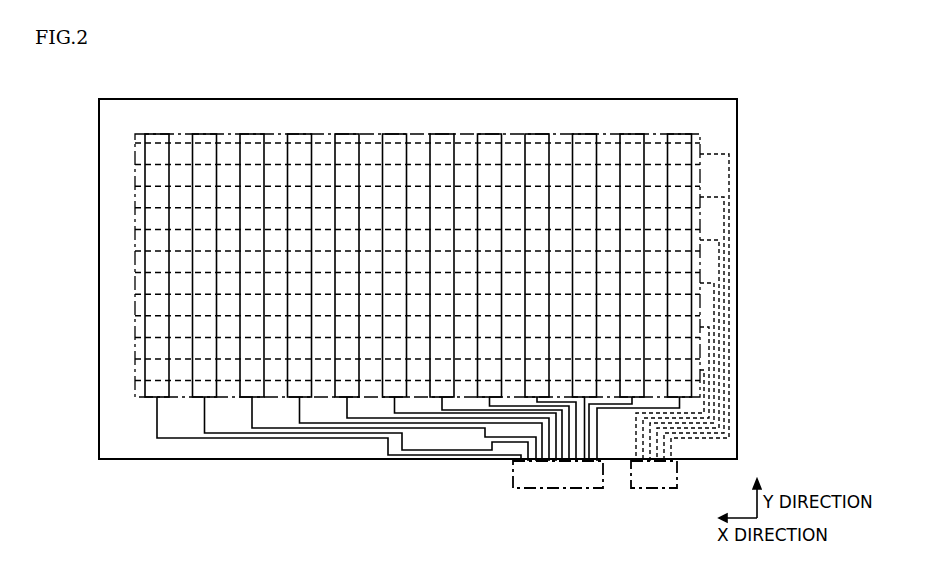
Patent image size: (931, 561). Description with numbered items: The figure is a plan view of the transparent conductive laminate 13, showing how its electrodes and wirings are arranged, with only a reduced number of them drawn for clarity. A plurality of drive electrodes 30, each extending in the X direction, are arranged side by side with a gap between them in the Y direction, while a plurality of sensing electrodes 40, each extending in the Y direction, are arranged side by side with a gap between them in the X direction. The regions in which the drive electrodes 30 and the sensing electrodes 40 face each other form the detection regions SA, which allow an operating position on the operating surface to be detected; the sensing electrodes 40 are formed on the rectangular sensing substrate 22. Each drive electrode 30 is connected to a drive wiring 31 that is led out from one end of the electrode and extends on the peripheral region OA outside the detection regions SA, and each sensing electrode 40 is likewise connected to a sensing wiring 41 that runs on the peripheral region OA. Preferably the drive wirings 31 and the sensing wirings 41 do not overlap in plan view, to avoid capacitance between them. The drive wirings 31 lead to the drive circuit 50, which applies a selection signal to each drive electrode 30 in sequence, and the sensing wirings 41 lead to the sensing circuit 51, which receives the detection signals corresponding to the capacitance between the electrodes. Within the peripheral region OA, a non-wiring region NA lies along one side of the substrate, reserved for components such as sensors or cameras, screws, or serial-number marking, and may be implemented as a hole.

The transparent conductive laminate 13 is at (653, 71).
The sensing substrate 22 is at (286, 460).
The drive electrodes 30 is at (135, 153).
The drive wirings 31 is at (725, 207).
The sensing electrodes 40 is at (159, 139).
The sensing wirings 41 is at (229, 440).
The drive circuit 50 is at (677, 475).
The sensing circuit 51 is at (513, 478).
The detection regions SA is at (409, 250).
The peripheral region OA is at (737, 129).
The non-wiring region NA is at (432, 438).